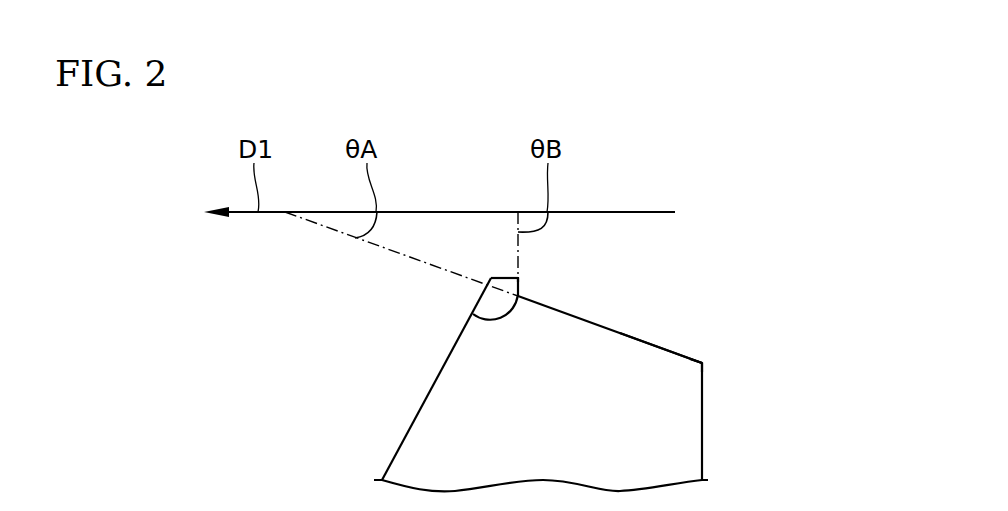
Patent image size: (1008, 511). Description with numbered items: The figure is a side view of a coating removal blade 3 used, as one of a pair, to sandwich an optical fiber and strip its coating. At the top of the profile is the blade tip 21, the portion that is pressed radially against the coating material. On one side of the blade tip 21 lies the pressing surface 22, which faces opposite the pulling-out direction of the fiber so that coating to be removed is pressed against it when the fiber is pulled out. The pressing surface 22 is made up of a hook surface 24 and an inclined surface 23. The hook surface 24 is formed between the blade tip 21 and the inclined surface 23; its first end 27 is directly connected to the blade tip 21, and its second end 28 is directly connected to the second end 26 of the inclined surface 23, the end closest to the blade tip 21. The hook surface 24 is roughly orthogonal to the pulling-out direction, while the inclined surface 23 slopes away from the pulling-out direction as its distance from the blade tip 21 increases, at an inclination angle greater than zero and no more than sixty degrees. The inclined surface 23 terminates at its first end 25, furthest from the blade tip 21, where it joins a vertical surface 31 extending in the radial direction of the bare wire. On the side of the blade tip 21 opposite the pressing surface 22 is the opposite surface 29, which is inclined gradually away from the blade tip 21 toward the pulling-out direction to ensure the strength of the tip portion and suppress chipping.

The coating removal blade 3 is at (357, 444).
The blade tip 21 is at (502, 277).
The pressing surface 22 is at (600, 326).
The inclined surface 23 is at (647, 342).
The hook surface 24 is at (518, 288).
The first end of the inclined surface 25 is at (703, 363).
The second end of the inclined surface 26 is at (500, 316).
The first end of the hook surface 27 is at (518, 278).
The second end of the hook surface 28 is at (427, 304).
The opposite surface 29 is at (438, 374).
The vertical surface 31 is at (704, 418).